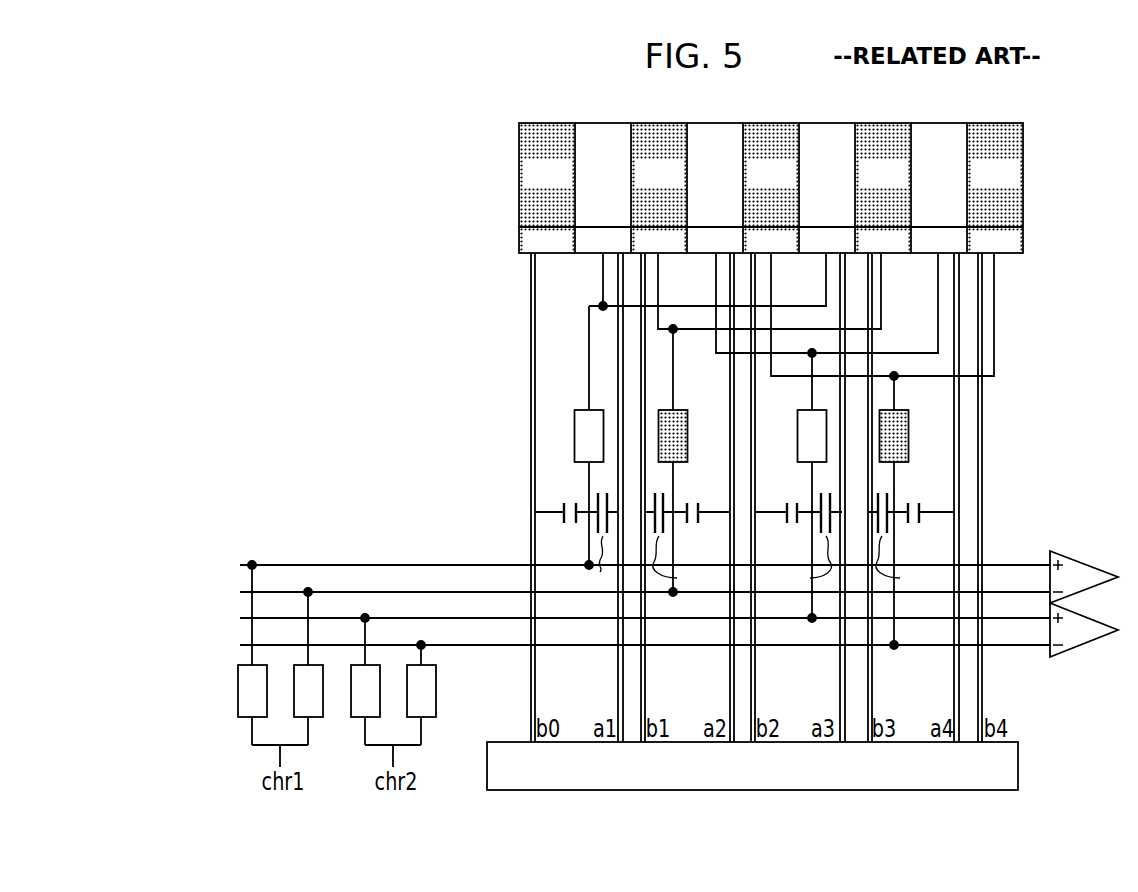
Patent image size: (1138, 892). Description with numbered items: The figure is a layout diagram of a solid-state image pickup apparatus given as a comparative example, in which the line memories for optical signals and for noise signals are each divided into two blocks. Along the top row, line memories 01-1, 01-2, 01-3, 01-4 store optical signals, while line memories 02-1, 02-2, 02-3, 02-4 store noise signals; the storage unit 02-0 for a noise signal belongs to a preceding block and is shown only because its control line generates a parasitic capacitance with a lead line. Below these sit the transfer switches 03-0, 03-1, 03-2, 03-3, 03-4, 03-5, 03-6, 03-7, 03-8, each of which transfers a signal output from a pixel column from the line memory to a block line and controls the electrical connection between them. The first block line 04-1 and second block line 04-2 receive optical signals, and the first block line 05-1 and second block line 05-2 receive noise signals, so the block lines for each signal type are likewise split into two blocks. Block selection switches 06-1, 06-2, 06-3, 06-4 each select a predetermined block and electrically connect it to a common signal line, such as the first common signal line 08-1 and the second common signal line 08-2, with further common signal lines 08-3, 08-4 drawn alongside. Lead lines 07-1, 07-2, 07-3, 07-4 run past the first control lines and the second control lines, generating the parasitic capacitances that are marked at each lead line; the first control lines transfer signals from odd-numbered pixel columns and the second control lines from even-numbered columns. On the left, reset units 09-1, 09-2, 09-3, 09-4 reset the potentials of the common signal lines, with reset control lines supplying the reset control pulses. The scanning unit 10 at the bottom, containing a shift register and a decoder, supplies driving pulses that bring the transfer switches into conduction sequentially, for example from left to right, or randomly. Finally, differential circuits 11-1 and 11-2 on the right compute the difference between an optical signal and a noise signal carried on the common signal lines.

The line memory 01-1 is at (603, 175).
The line memory 01-2 is at (715, 175).
The line memory 01-3 is at (827, 175).
The line memory 01-4 is at (939, 175).
The storage unit 02-0 is at (547, 188).
The line memory 02-1 is at (659, 188).
The line memory 02-2 is at (771, 188).
The line memory 02-3 is at (883, 188).
The line memory 02-4 is at (995, 188).
The terminal 03-0 is at (547, 486).
The transfer switch 03-1 is at (603, 486).
The transfer switch 03-2 is at (659, 486).
The transfer switch 03-3 is at (715, 486).
The transfer switch 03-4 is at (771, 486).
The transfer switch 03-5 is at (827, 486).
The transfer switch 03-6 is at (883, 486).
The transfer switch 03-7 is at (939, 486).
The transfer switch 03-8 is at (995, 486).
The first block line 04-1 is at (707, 281).
The second block line 04-2 is at (827, 305).
The first block line 05-1 is at (769, 293).
The second block line 05-2 is at (882, 317).
The block selection switch 06-1 is at (579, 410).
The block selection switch 06-2 is at (689, 410).
The resistor 06-3 is at (803, 410).
The resistor 06-4 is at (909, 410).
The lead line 07-1 is at (577, 532).
The lead line 07-2 is at (687, 532).
The lead line 07-3 is at (798, 531).
The lead line 07-4 is at (911, 531).
The first common signal line 08-1 is at (645, 558).
The second common signal line 08-2 is at (645, 585).
The signal line 08-3 is at (645, 611).
The signal line 08-4 is at (645, 638).
The reset unit 09-1 is at (247, 719).
The reset unit 09-2 is at (303, 719).
The charging resistor 09-3 is at (360, 719).
The charging resistor 09-4 is at (416, 719).
The scanning unit 10 is at (625, 790).
The differential circuit 11-1 is at (1088, 563).
The differential circuit 11-2 is at (1090, 650).